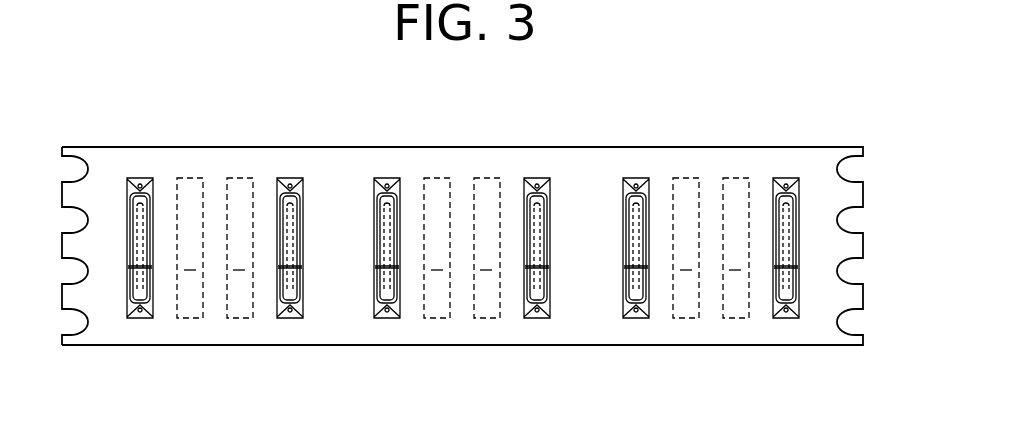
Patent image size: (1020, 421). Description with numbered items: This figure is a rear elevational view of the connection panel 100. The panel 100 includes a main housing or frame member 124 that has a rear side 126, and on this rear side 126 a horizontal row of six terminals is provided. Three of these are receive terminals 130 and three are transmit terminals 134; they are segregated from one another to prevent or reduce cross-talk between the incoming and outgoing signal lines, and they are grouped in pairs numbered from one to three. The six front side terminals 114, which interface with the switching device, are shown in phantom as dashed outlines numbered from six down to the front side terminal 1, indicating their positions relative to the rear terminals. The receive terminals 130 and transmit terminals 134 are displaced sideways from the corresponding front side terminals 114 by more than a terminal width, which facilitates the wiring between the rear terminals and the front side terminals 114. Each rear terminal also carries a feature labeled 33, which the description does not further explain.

The connection panel 100 is at (796, 134).
The frame member 124 is at (62, 245).
The rear side 126 is at (107, 160).
The receive terminals 130 is at (153, 178).
The transmit terminals 134 is at (277, 178).
The front side terminals 114 is at (195, 303).
The connector 1 is at (454, 247).
The connector latch 33 is at (473, 234).